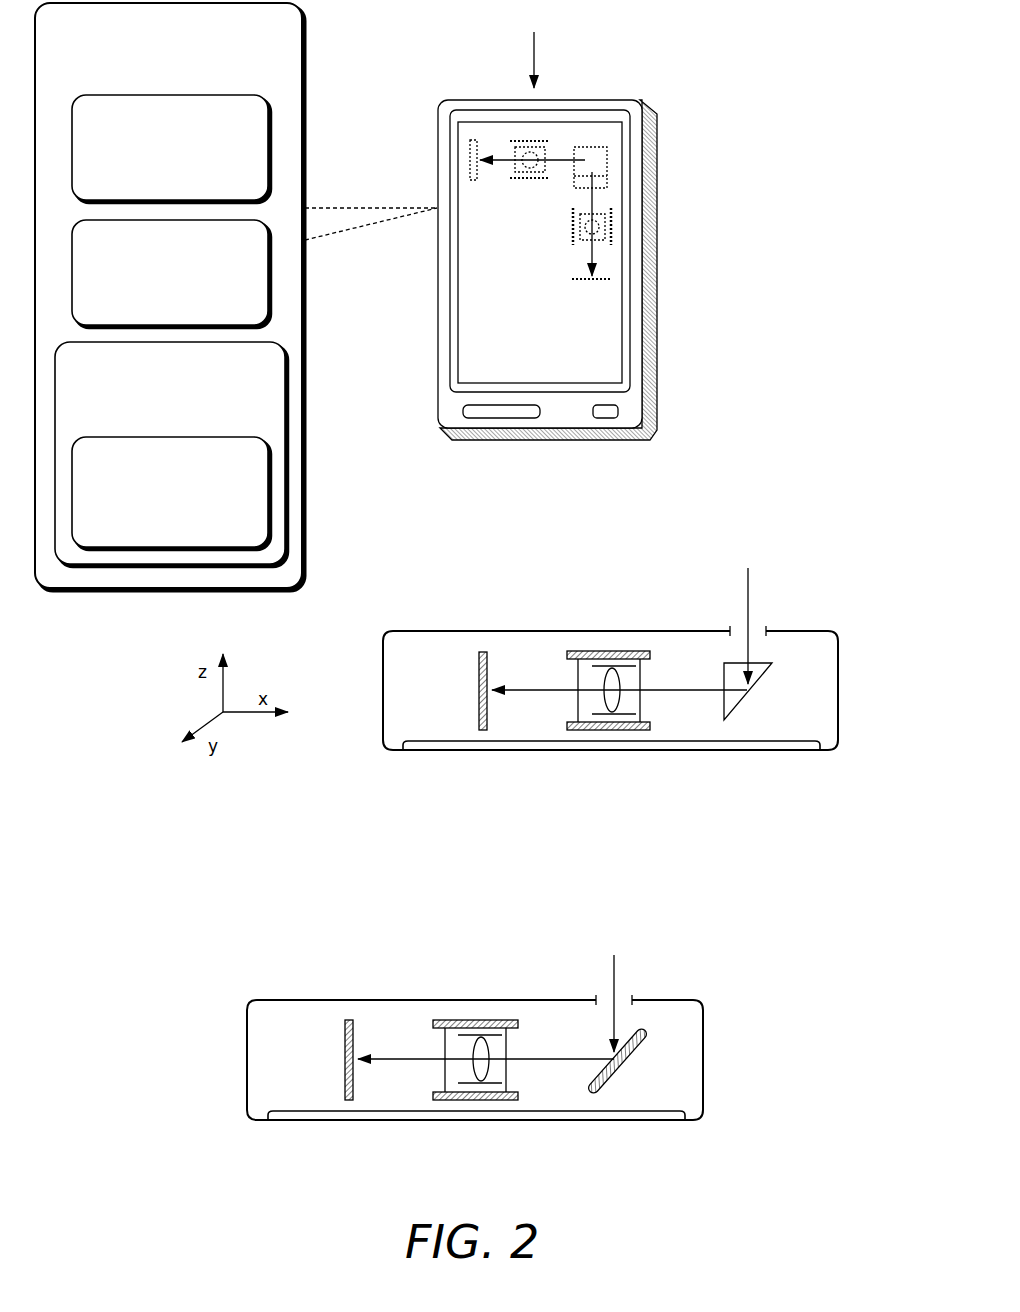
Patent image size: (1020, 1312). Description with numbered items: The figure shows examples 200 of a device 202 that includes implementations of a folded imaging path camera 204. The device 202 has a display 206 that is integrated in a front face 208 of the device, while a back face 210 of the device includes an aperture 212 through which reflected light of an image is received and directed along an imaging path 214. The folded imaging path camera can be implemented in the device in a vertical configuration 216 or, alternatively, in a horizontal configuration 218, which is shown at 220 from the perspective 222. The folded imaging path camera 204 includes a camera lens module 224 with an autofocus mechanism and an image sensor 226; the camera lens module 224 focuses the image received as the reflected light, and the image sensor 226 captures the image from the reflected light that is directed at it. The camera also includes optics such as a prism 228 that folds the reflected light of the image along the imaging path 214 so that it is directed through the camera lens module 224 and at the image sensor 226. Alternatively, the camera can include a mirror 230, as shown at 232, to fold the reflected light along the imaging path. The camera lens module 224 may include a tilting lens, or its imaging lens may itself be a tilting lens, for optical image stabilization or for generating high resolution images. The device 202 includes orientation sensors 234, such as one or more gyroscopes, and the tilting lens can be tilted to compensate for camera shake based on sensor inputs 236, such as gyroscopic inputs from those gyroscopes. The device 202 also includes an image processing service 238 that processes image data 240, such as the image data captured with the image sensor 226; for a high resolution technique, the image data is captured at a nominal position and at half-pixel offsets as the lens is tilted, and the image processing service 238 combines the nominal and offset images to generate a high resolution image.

The examples 200 is at (775, 125).
The device 202 is at (436, 561).
The folded imaging path camera 204 is at (535, 655).
The display 206 is at (476, 285).
The front face 208 is at (446, 415).
The back face 210 is at (810, 632).
The aperture 212 is at (760, 622).
The imaging path 214 is at (679, 797).
The vertical configuration 216 is at (610, 150).
The horizontal configuration 218 is at (495, 140).
The side view of horizontal configuration 220 is at (685, 520).
The perspective 222 is at (562, 60).
The camera lens module 224 is at (632, 722).
The image sensor 226 is at (478, 652).
The prism 228 is at (745, 700).
The mirror 230 is at (615, 1092).
The mirror implementation view 232 is at (430, 932).
The orientation sensors 234 is at (171, 149).
The sensor inputs 236 is at (171, 274).
The image processing service 238 is at (171, 454).
The image data 240 is at (171, 493).